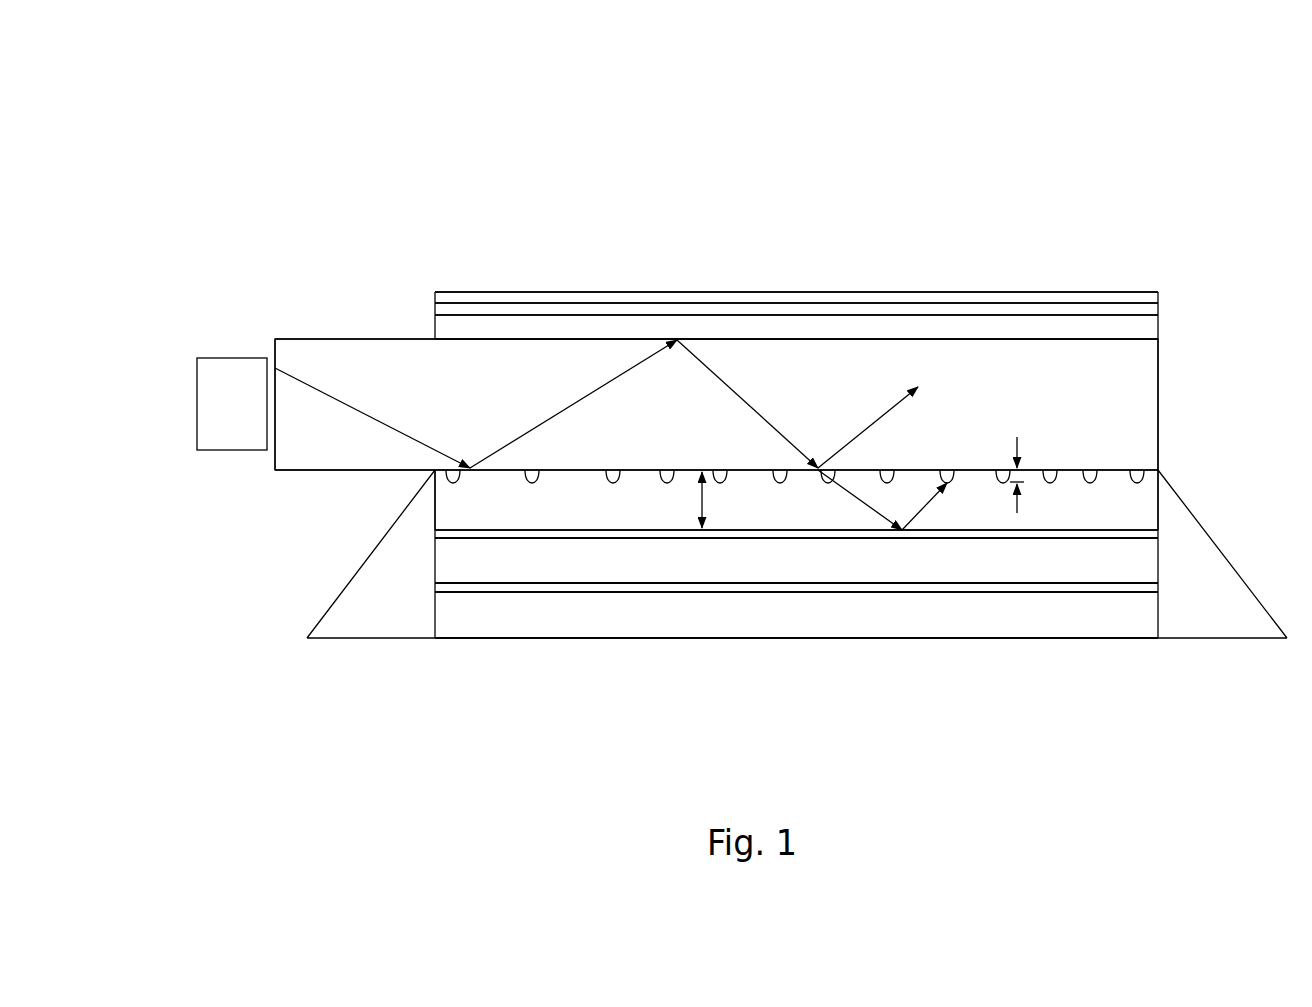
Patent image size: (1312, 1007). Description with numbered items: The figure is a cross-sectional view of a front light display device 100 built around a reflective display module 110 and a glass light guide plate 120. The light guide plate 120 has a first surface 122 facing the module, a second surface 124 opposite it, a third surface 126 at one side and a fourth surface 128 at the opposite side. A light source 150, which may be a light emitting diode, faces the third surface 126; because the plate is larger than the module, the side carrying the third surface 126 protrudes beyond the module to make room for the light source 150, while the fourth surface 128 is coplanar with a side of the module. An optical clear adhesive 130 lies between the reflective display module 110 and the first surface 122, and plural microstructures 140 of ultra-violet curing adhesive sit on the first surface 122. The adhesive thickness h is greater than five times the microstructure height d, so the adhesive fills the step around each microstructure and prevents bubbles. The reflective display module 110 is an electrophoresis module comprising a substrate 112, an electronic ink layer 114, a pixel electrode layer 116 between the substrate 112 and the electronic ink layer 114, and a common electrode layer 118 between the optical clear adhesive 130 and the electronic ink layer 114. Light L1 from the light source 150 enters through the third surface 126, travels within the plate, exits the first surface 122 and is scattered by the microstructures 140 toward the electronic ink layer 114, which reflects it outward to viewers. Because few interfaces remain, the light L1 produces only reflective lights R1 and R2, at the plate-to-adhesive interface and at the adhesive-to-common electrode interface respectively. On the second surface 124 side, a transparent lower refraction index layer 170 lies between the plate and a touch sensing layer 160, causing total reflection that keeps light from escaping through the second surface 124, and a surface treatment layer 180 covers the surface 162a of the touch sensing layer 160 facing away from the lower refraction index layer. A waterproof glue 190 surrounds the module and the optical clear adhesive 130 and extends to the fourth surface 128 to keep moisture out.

The front light display device 100 is at (205, 102).
The reflective display module 110 is at (228, 503).
The substrate 112 is at (437, 618).
The electronic ink layer 114 is at (437, 560).
The pixel electrode layer 116 is at (437, 593).
The common electrode layer 118 is at (437, 538).
The light guide plate 120 is at (318, 349).
The first surface 122 is at (1107, 468).
The second surface 124 is at (862, 336).
The third surface 126 is at (272, 461).
The fourth surface 128 is at (1160, 402).
The optical clear adhesive 130 is at (1127, 505).
The microstructures 140 is at (1003, 484).
The light source 150 is at (197, 420).
The touch sensing layer 160 is at (1052, 310).
The surface of the touch sensing layer 162a is at (698, 291).
The transparent lower refraction index layer 170 is at (960, 326).
The surface treatment layer 180 is at (543, 303).
The waterproof glue 190 is at (1193, 615).
The light L1 is at (588, 435).
The reflective light R1 is at (886, 416).
The reflective light R2 is at (931, 506).
The thickness of the optical clear adhesive h is at (714, 500).
The height of the microstructures d is at (1022, 476).